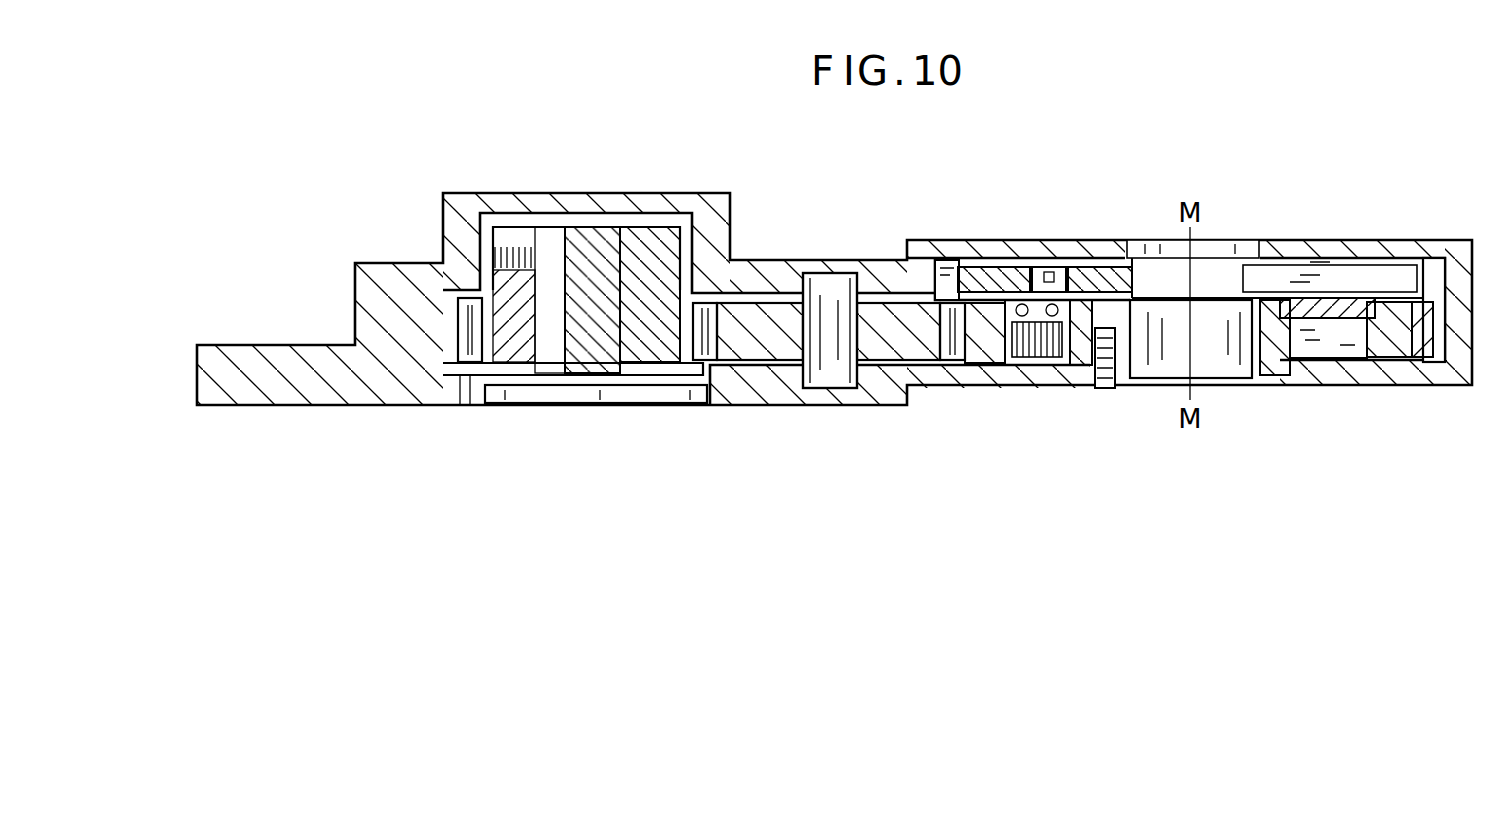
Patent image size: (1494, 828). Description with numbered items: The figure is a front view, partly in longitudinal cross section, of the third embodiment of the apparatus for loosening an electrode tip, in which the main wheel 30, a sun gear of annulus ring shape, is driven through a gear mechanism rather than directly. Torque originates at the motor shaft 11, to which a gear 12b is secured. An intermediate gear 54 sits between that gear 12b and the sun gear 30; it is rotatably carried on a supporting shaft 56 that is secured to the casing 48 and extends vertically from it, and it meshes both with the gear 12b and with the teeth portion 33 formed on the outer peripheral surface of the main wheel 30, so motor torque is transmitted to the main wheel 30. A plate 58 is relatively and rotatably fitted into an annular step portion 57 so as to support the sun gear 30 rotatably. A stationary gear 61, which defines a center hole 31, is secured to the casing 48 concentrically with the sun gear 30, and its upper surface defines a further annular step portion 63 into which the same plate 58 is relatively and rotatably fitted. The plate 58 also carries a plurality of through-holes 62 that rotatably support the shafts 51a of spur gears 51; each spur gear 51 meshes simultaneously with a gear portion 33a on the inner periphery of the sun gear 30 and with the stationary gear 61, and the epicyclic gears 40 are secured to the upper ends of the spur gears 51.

The motor shaft 11 is at (590, 250).
The gear 12b is at (660, 347).
The casing 48 is at (718, 238).
The intermediate gear 54 is at (752, 335).
The supporting shaft 56 is at (830, 380).
The annular step portion 57 is at (962, 300).
The epicyclic gears 40 is at (1080, 290).
The annular step portion 63 is at (1305, 303).
The plate 58 is at (1300, 270).
The teeth portion 33 is at (1430, 300).
The through-holes 62 is at (1030, 357).
The spur gears 51 is at (1053, 363).
The shafts 51a is at (1090, 372).
The center hole 31 is at (1225, 358).
The stationary gear 61 is at (1272, 347).
The gear portion 33a is at (1342, 347).
The main wheel 30 is at (1390, 347).